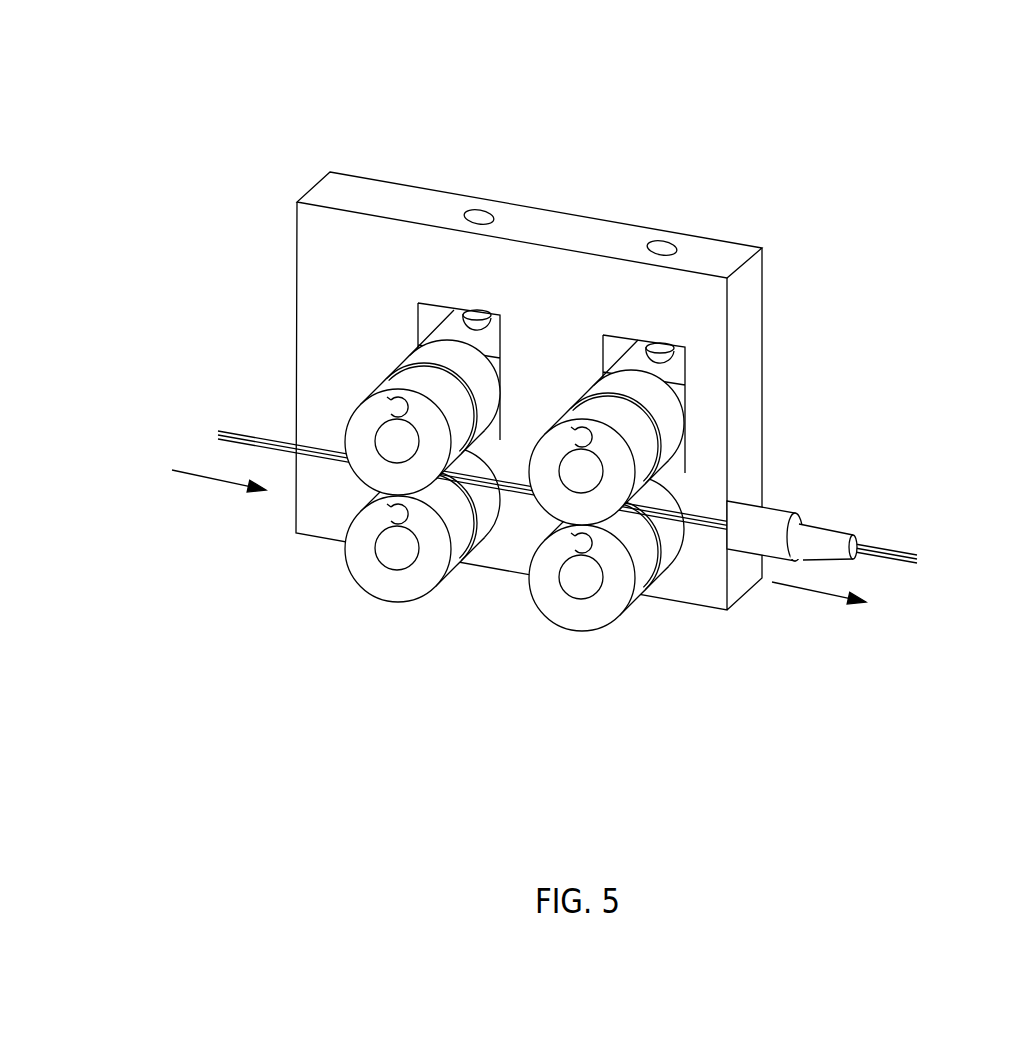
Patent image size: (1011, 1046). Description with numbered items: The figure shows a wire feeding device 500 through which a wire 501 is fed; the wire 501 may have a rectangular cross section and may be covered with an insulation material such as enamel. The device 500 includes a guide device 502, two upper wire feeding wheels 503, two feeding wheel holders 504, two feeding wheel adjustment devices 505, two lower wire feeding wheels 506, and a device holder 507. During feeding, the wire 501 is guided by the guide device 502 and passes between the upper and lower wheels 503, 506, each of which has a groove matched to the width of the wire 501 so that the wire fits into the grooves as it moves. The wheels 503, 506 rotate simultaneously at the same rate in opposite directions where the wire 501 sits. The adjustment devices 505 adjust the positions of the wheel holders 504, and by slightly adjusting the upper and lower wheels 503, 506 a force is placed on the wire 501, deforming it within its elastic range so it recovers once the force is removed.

The wire feeding device 500 is at (603, 38).
The wire 501 is at (903, 560).
The guide device 502 is at (808, 533).
The upper wire feeding wheels 503 is at (365, 425).
The feeding wheel holders 504 is at (445, 320).
The feeding wheel adjustment devices 505 is at (472, 315).
The lower wire feeding wheels 506 is at (377, 578).
The device holder 507 is at (512, 560).